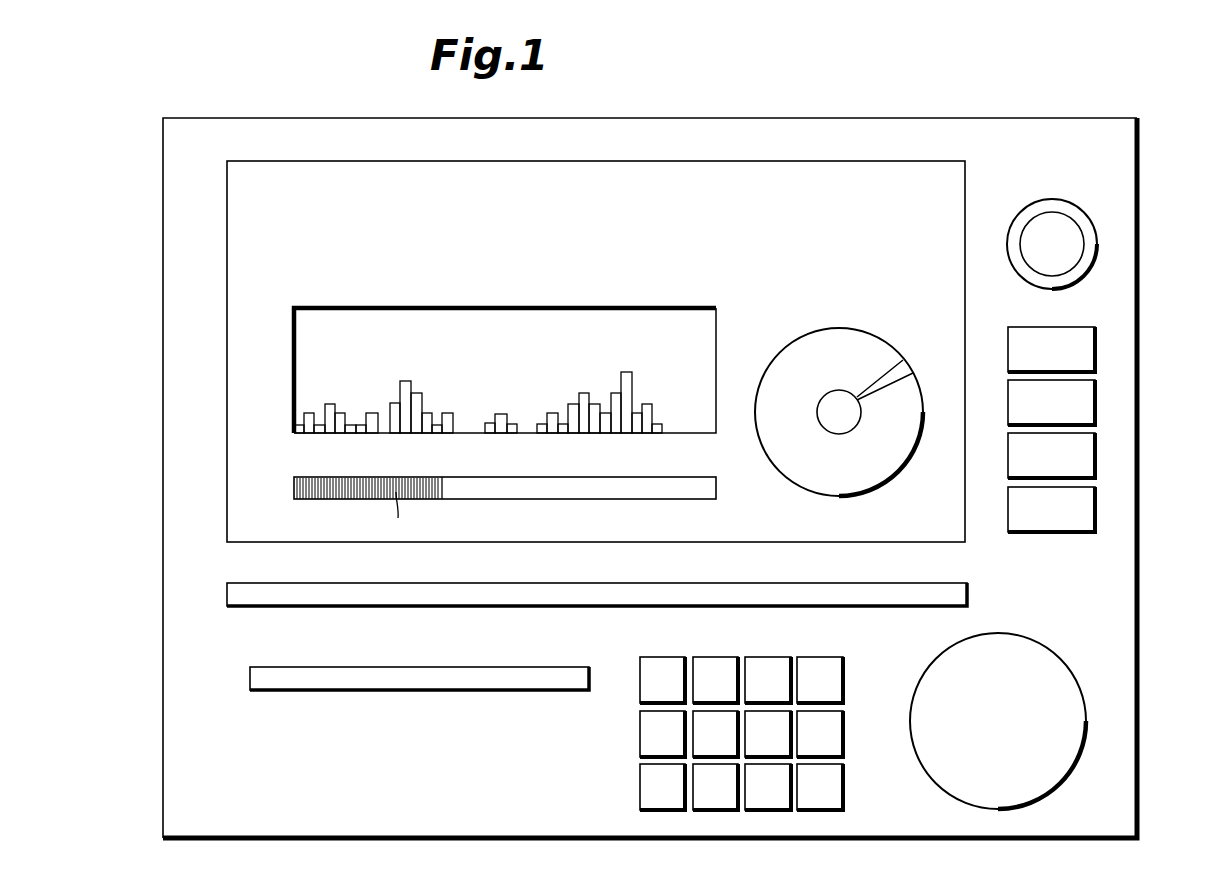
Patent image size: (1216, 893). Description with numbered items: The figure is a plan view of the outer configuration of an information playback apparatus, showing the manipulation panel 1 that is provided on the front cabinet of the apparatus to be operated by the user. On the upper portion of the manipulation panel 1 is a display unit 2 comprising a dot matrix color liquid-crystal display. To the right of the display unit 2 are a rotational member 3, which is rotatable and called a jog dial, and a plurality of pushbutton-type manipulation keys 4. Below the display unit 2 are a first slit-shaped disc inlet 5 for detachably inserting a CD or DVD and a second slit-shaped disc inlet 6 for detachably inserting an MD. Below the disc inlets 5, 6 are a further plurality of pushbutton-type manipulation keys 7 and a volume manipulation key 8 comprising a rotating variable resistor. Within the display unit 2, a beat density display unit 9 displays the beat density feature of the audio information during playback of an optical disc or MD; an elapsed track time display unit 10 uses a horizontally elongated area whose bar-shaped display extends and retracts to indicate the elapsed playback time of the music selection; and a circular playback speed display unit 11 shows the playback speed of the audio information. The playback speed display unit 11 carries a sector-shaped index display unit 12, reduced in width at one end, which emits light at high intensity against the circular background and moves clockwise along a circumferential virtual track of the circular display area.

The manipulation panel 1 is at (680, 117).
The display unit 2 is at (912, 188).
The rotational member 3 is at (1057, 246).
The manipulation keys 4 is at (1115, 361).
The first slit-shaped disc inlet 5 is at (237, 594).
The second slit-shaped disc inlet 6 is at (260, 680).
The manipulation keys 7 is at (618, 752).
The volume manipulation key 8 is at (963, 757).
The beat density display unit 9 is at (291, 368).
The elapsed track time display unit 10 is at (293, 492).
The playback speed display unit 11 is at (892, 460).
The index display unit 12 is at (900, 366).